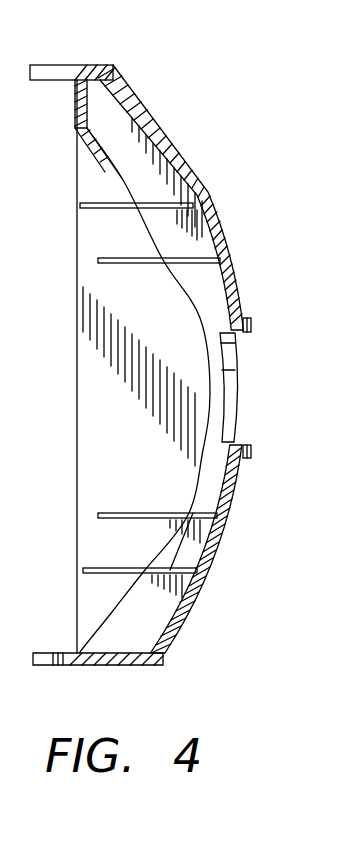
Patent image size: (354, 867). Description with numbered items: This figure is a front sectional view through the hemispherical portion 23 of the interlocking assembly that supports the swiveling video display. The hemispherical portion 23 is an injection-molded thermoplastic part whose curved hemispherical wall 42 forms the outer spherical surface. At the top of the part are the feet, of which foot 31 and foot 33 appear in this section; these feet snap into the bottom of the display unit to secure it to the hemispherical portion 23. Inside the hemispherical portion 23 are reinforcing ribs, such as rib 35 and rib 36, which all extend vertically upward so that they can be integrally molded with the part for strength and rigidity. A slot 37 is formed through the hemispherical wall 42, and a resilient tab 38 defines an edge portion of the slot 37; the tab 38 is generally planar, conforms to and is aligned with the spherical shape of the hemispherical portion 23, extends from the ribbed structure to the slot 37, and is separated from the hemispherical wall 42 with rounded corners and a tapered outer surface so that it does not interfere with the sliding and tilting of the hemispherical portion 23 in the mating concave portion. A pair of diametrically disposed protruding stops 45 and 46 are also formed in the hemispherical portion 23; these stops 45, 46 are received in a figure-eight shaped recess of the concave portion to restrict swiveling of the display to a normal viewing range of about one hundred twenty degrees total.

The hemispherical portion 23 is at (243, 228).
The foot 31 is at (50, 666).
The foot 33 is at (50, 65).
The reinforcing rib 35 is at (207, 289).
The reinforcing rib 36 is at (150, 226).
The slot 37 is at (226, 389).
The resilient tab 38 is at (236, 288).
The hemispherical wall 42 is at (188, 167).
The protruding stop 45 is at (253, 326).
The protruding stop 46 is at (253, 450).